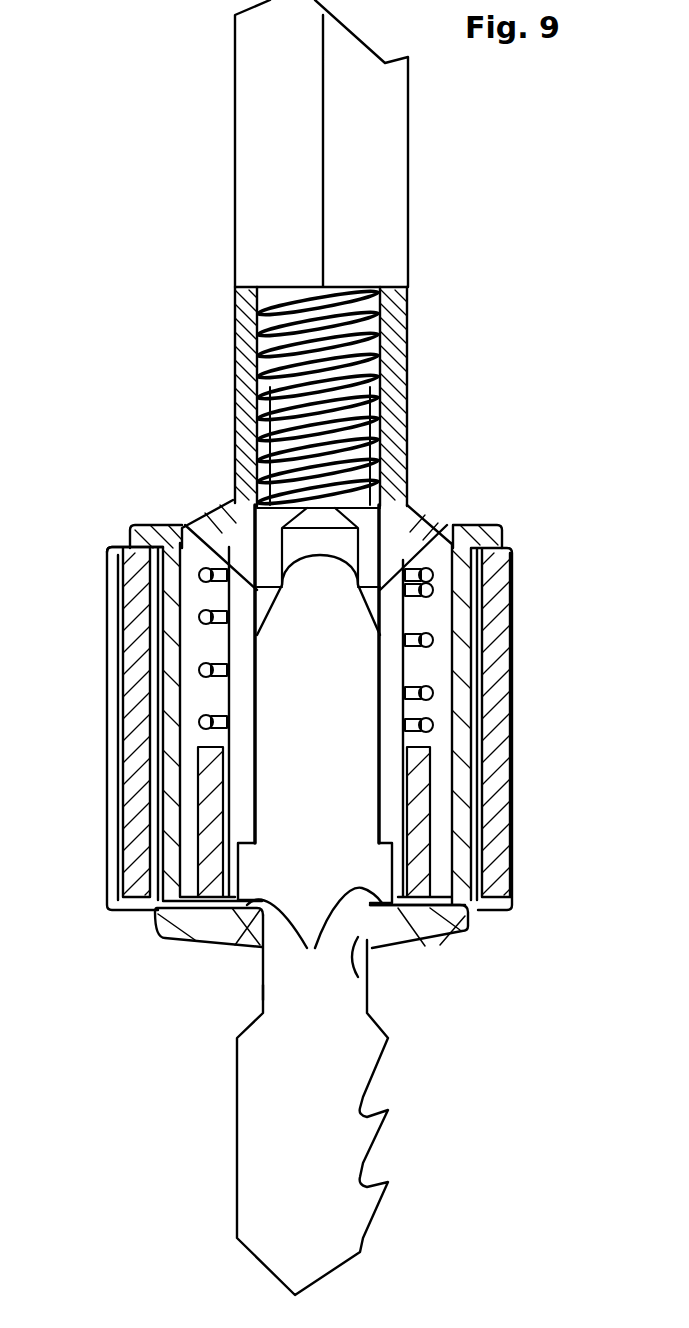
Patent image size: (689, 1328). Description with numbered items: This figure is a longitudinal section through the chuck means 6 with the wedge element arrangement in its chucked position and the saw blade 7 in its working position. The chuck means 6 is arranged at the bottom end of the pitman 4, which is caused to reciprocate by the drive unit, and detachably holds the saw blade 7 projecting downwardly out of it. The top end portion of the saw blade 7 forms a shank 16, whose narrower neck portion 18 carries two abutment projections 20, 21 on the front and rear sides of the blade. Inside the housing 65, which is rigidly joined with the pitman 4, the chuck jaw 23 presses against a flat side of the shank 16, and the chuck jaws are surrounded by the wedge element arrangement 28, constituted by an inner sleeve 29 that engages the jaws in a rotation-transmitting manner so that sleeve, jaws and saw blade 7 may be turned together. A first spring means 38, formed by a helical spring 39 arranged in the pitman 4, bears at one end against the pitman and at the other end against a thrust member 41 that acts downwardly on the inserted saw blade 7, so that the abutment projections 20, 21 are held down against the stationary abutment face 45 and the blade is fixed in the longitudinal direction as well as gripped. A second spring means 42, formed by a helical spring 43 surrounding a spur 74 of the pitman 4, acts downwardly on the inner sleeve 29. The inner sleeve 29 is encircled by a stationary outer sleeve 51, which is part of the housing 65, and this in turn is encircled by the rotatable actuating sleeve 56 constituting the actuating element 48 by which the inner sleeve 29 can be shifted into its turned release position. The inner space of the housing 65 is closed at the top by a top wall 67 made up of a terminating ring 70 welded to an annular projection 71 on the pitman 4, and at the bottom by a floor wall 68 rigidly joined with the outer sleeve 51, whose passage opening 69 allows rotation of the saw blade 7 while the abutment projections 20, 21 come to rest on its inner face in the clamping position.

The pitman 4 is at (410, 179).
The chuck means 6 is at (540, 491).
The saw blade 7 is at (237, 1166).
The shank 16 is at (275, 767).
The neck portion 18 is at (265, 990).
The abutment projection 20 is at (442, 936).
The abutment projection 21 is at (158, 954).
The chuck jaw 23 is at (390, 792).
The wedge element arrangement 28 is at (126, 820).
The inner sleeve 29 is at (200, 792).
The first spring means 38 is at (380, 379).
The helical spring 39 is at (390, 322).
The thrust member 41 is at (383, 548).
The second spring means 42 is at (234, 634).
The helical spring 43 is at (200, 610).
The abutment face 45 is at (314, 938).
The actuating element 48 is at (99, 728).
The outer sleeve 51 is at (465, 652).
The actuating sleeve 56 is at (135, 648).
The housing 65 is at (286, 988).
The top wall 67 is at (165, 525).
The floor wall 68 is at (286, 988).
The passage opening 69 is at (378, 996).
The terminating ring 70 is at (472, 532).
The annular projection 71 is at (225, 520).
The spur 74 is at (383, 697).